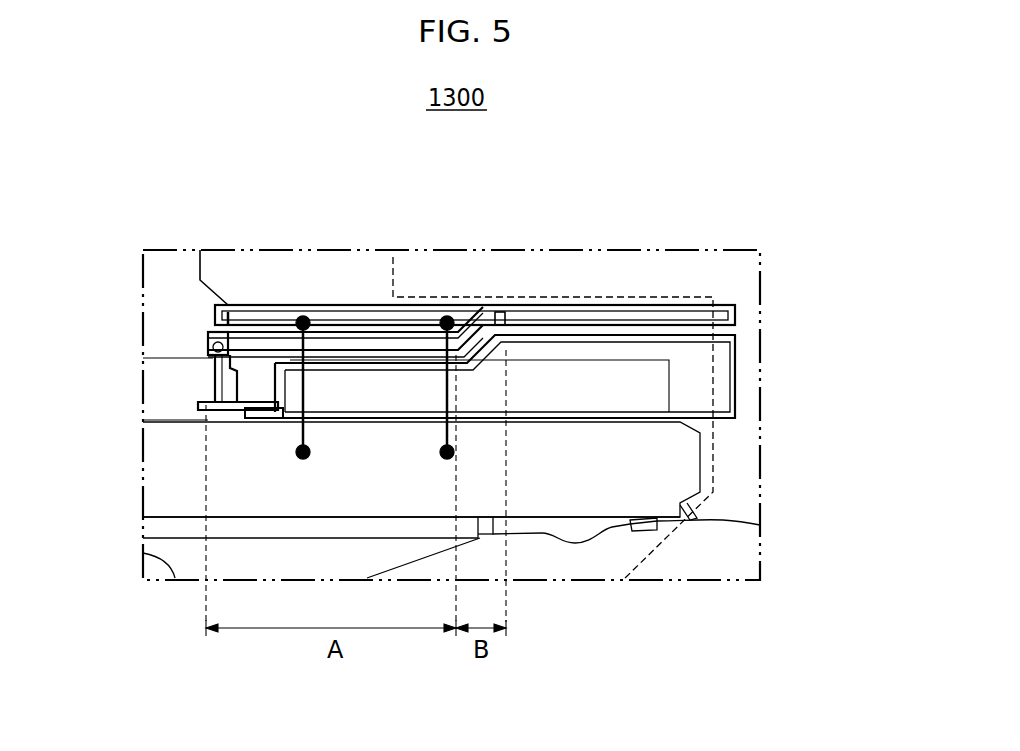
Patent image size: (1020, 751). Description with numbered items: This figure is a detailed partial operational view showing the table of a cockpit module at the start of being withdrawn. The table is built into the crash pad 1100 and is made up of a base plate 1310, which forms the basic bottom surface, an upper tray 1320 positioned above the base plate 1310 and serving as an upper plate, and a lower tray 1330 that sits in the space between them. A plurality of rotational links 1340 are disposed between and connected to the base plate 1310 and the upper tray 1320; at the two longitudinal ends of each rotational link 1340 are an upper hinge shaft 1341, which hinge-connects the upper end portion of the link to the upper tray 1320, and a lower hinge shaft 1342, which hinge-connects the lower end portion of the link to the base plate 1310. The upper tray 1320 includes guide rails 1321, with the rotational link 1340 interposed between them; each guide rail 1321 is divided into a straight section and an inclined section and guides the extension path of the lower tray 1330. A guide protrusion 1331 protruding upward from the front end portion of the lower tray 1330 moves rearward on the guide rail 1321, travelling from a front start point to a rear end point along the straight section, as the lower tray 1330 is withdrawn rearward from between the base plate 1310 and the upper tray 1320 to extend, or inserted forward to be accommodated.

The crash pad 1100 is at (210, 270).
The base plate 1310 is at (628, 478).
The upper tray 1320 is at (721, 316).
The guide rail 1321 is at (390, 297).
The lower tray 1330 is at (735, 379).
The guide protrusion 1331 is at (217, 363).
The rotational link 1340 is at (218, 380).
The upper hinge shaft 1341 is at (306, 316).
The lower hinge shaft 1342 is at (296, 452).